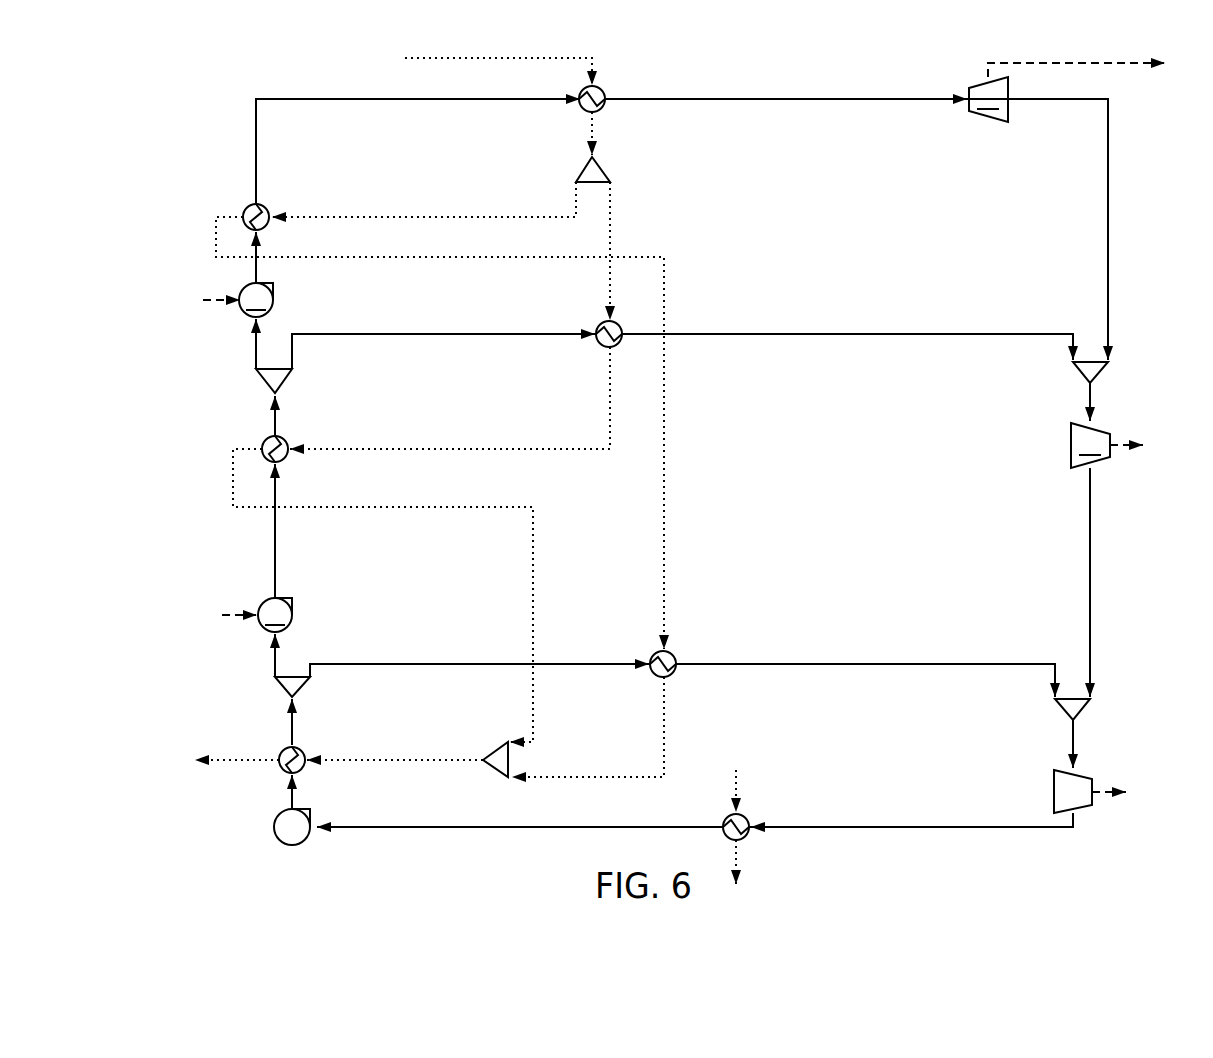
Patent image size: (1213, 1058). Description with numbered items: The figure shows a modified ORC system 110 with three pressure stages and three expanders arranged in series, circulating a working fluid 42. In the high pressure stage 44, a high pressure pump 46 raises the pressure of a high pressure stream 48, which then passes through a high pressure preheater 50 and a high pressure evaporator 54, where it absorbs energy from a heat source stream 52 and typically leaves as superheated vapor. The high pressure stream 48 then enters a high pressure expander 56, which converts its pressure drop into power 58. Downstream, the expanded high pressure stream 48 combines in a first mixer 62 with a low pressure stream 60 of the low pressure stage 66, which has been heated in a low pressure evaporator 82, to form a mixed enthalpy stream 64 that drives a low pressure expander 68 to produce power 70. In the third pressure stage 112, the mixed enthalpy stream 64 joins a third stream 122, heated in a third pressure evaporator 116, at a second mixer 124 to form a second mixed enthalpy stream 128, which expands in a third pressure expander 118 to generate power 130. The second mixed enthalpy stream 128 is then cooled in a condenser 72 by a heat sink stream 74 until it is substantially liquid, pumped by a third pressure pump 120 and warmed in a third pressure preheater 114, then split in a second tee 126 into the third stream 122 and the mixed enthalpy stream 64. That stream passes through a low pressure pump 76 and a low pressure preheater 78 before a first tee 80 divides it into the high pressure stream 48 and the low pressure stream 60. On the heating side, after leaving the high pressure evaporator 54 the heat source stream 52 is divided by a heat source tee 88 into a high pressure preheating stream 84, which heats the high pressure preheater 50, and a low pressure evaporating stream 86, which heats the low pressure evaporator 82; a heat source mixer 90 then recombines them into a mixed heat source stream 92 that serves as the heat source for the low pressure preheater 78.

The working fluid 42 is at (254, 148).
The high pressure stage 44 is at (811, 219).
The high pressure pump 46 is at (238, 300).
The high pressure stream 48 is at (303, 101).
The high pressure preheater 50 is at (270, 226).
The heat source stream 52 is at (431, 59).
The high pressure evaporator 54 is at (606, 92).
The high pressure expander 56 is at (988, 99).
The power 58 is at (1128, 66).
The low pressure stream 60 is at (437, 332).
The first mixer 62 is at (1078, 372).
The mixed enthalpy stream 64 is at (278, 550).
The low pressure stage 66 is at (811, 502).
The low pressure expander 68 is at (1090, 445).
The power 70 is at (1123, 458).
The condenser 72 is at (724, 818).
The heat sink stream 74 is at (745, 790).
The low pressure pump 76 is at (257, 637).
The low pressure preheater 78 is at (290, 461).
The first tee 80 is at (262, 381).
The low pressure evaporator 82 is at (597, 342).
The high pressure preheating stream 84 is at (420, 215).
The low pressure evaporating stream 86 is at (612, 222).
The heat source tee 88 is at (574, 176).
The heat source mixer 90 is at (512, 757).
The mixed heat source stream 92 is at (207, 758).
The modified ORC system 110 is at (777, 95).
The third pressure stage 112 is at (855, 754).
The third pressure preheater 114 is at (305, 773).
The third pressure evaporator 116 is at (678, 659).
The third pressure expander 118 is at (1052, 796).
The third pressure pump 120 is at (273, 824).
The third stream 122 is at (478, 662).
The second mixer 124 is at (1060, 711).
The second tee 126 is at (280, 686).
The second mixed enthalpy stream 128 is at (1076, 750).
The power 130 is at (1112, 798).